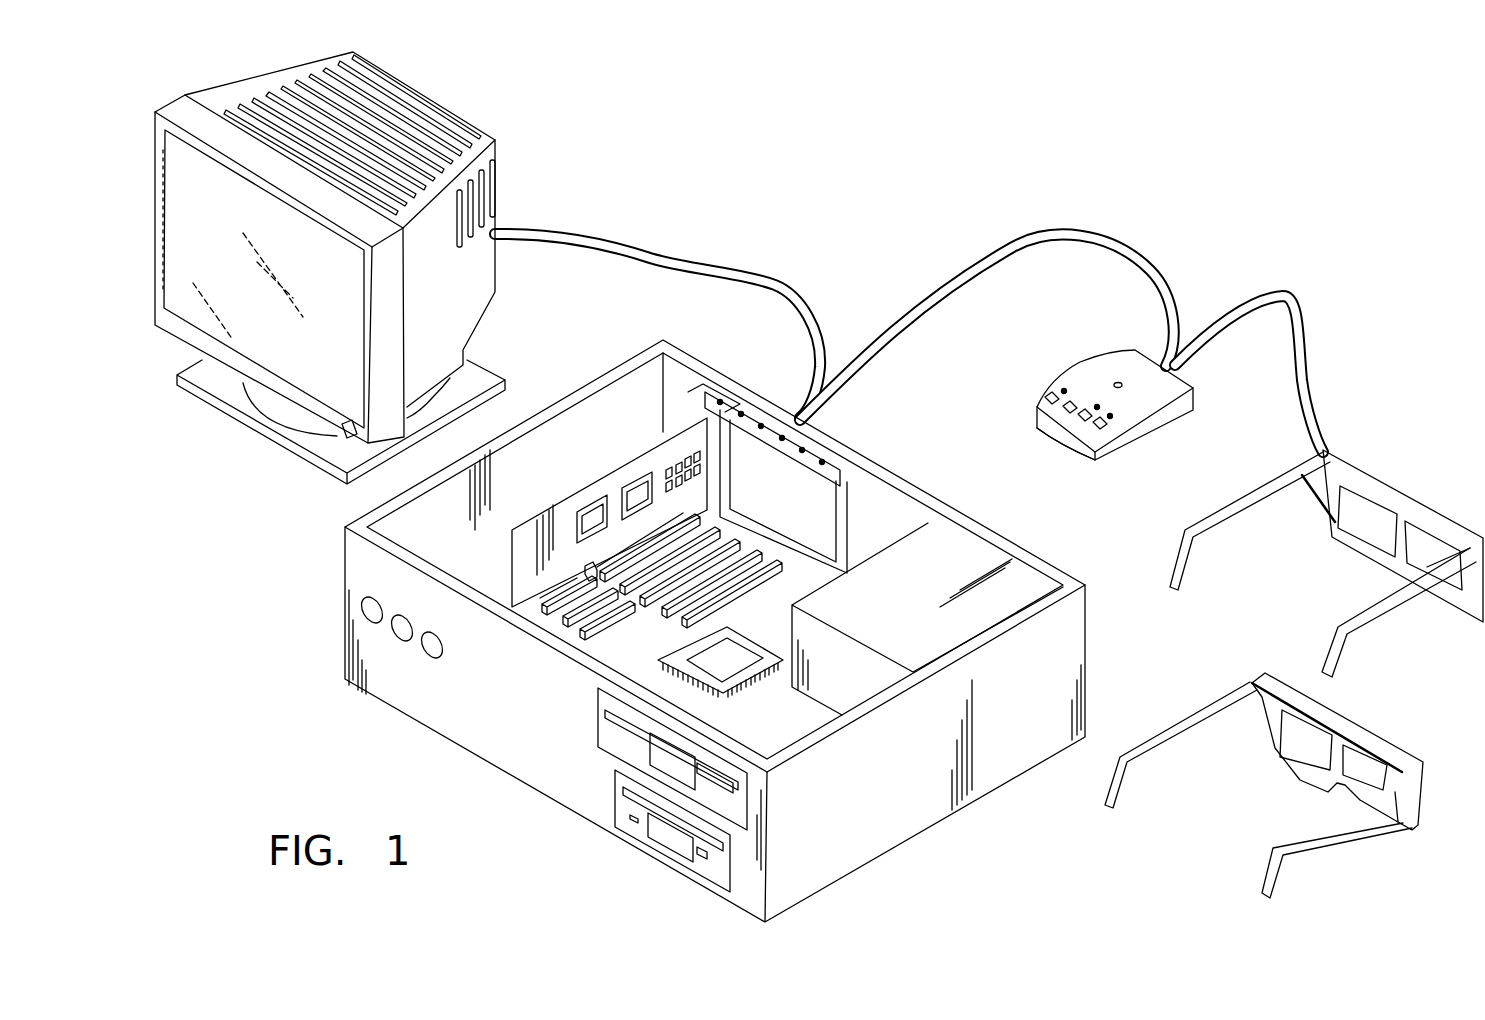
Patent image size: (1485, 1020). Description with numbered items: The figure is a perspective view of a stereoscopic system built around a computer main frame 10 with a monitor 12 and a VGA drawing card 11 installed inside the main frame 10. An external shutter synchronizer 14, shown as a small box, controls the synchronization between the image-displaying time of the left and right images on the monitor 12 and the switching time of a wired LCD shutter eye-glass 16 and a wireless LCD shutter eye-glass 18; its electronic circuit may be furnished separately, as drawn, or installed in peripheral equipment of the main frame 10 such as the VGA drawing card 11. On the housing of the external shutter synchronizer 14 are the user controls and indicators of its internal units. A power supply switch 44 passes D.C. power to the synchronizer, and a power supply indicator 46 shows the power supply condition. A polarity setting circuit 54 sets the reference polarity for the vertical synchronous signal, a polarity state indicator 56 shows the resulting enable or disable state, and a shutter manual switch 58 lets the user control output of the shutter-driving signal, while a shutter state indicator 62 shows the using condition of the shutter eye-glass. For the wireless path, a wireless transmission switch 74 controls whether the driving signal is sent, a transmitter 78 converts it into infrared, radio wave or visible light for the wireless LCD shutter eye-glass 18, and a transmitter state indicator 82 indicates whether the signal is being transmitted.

The main frame 10 is at (358, 565).
The VGA drawing card 11 is at (680, 428).
The monitor 12 is at (478, 125).
The external shutter synchronizer 14 is at (1190, 396).
The wired LCD shutter eye-glass 16 is at (1378, 484).
The wireless LCD shutter eye-glass 18 is at (1395, 753).
The power supply switch 44 is at (1053, 392).
The power supply indicator 46 is at (1064, 390).
The polarity setting circuit 54 is at (1080, 417).
The polarity state indicator 56 is at (1100, 407).
The shutter manual switch 58 is at (1048, 422).
The shutter state indicator 62 is at (1078, 398).
The wireless transmission switch 74 is at (1100, 430).
The transmitter 78 is at (1117, 382).
The transmitter state indicator 82 is at (1112, 417).